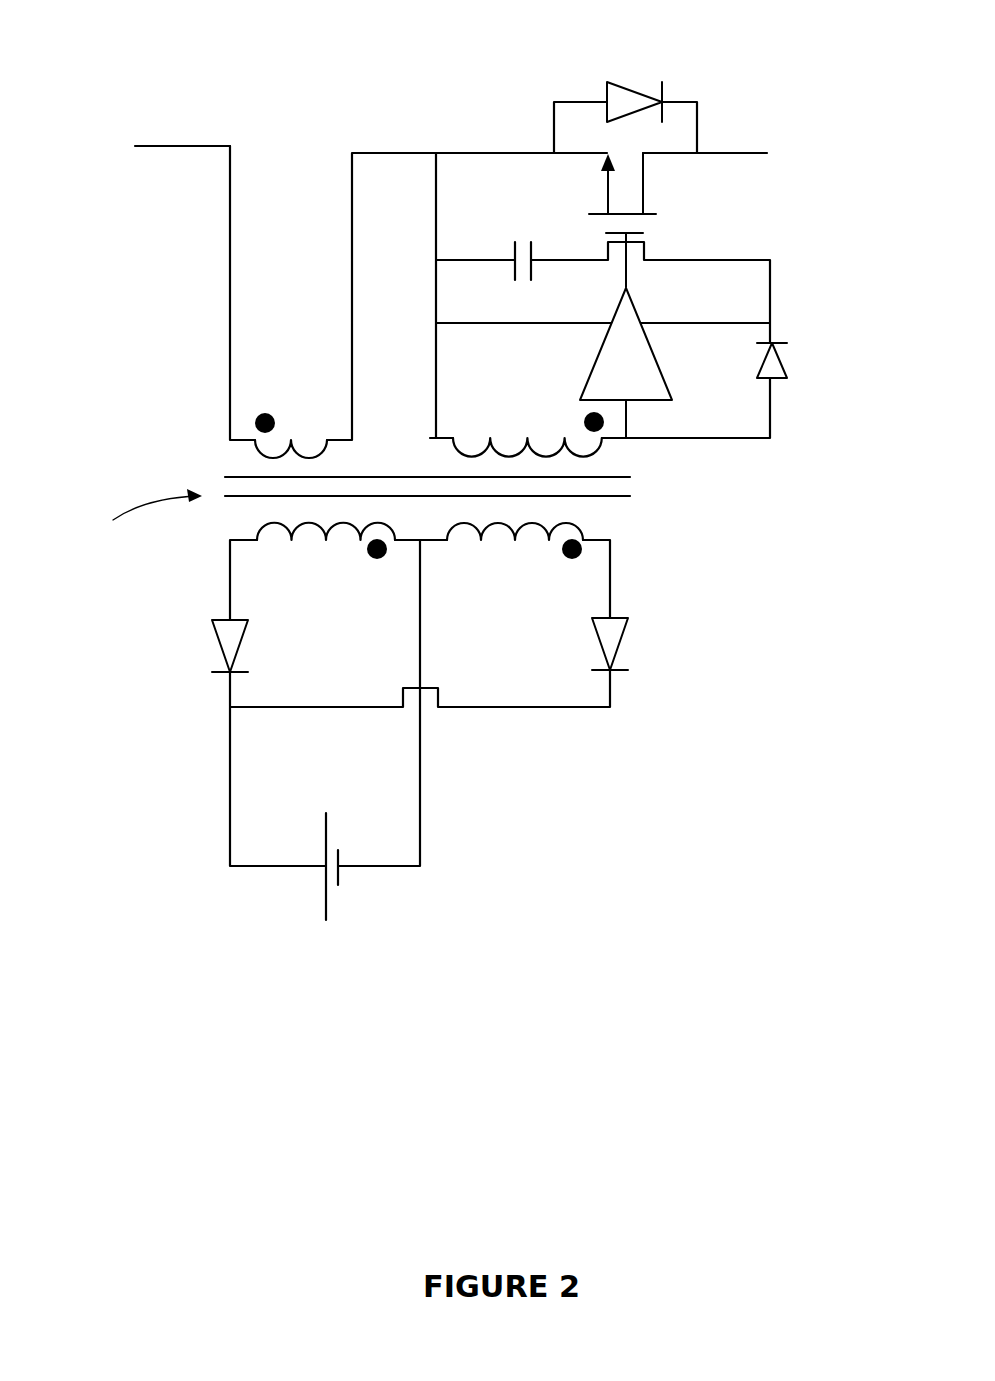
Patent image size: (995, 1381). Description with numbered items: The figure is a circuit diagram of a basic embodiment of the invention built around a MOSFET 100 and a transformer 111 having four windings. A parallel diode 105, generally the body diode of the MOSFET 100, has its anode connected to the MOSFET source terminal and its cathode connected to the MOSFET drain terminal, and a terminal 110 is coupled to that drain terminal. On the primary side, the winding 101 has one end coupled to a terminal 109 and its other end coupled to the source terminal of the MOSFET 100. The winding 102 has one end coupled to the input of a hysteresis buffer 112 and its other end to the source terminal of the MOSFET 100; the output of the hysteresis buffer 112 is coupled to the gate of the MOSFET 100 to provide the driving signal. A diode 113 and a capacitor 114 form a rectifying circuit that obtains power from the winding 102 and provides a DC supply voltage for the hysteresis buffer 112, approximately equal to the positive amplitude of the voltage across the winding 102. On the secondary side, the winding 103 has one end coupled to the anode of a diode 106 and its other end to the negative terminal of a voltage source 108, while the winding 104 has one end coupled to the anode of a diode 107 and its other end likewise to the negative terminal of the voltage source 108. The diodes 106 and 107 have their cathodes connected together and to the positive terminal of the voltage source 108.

The MOSFET 100 is at (678, 172).
The winding 101 is at (317, 422).
The winding 102 is at (520, 432).
The winding 103 is at (495, 540).
The winding 104 is at (325, 558).
The parallel diode 105 is at (610, 65).
The diode 106 is at (643, 635).
The diode 107 is at (202, 637).
The voltage source 108 is at (343, 885).
The terminal 109 is at (127, 145).
The terminal 110 is at (767, 136).
The transformer 111 is at (365, 520).
The hysteresis buffer 112 is at (665, 357).
The diode 113 is at (797, 373).
The capacitor 114 is at (522, 233).